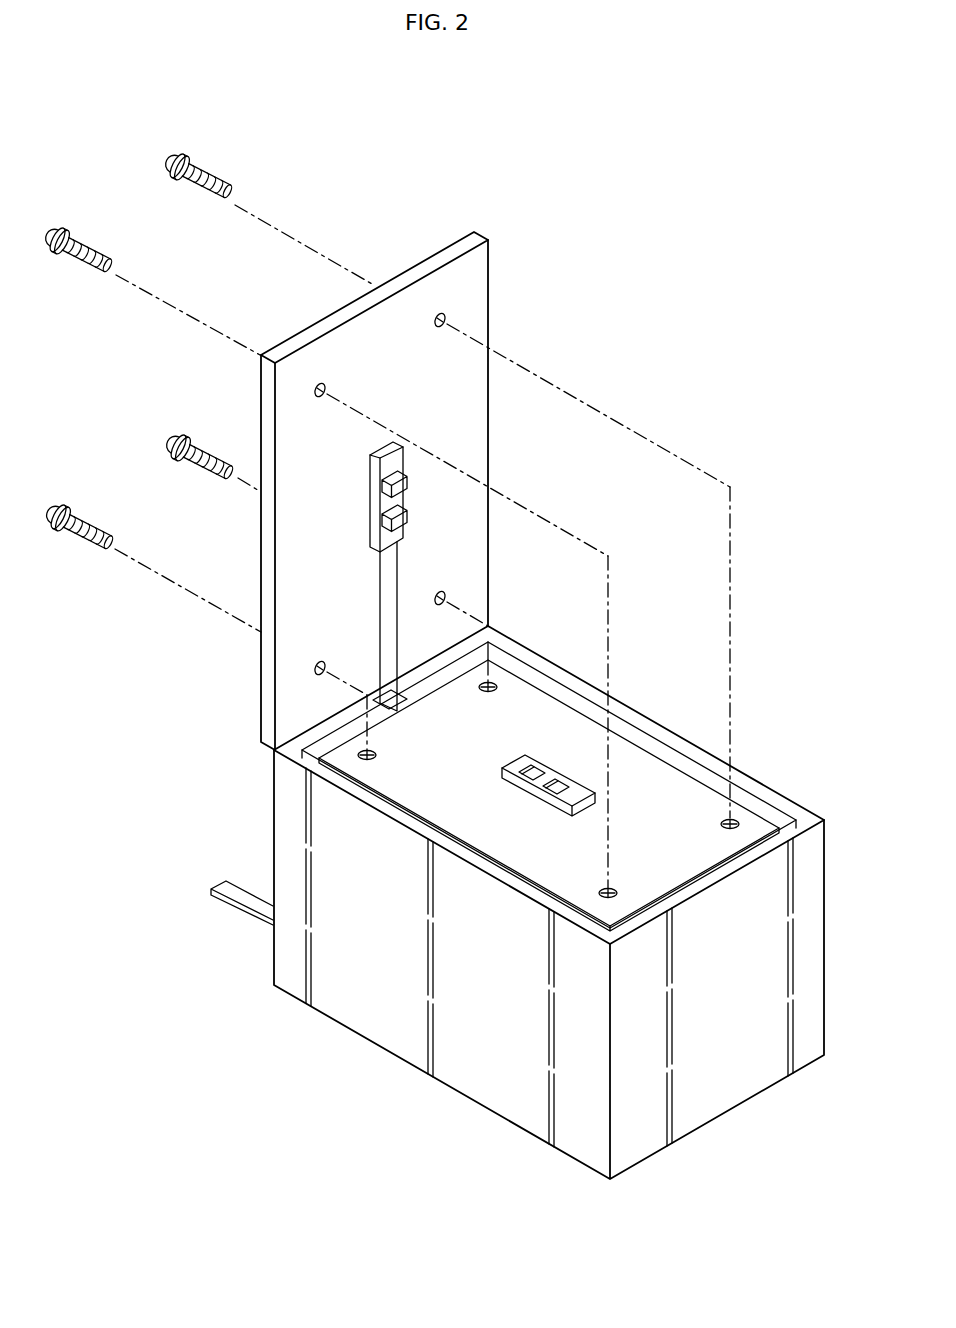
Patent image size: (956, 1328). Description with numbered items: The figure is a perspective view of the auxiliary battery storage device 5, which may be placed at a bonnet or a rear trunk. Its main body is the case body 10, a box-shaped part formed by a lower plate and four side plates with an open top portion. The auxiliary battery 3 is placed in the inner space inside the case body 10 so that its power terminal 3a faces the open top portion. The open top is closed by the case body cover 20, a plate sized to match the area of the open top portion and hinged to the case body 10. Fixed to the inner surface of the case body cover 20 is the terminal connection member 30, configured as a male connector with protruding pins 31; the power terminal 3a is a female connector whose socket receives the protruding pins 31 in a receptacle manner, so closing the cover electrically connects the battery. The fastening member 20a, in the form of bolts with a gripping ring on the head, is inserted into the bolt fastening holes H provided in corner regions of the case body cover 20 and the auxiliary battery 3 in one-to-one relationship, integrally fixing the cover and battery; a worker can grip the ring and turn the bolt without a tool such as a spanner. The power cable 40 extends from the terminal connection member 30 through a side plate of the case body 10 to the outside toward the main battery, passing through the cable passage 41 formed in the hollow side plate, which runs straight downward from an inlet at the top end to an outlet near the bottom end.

The auxiliary battery storage device 5 is at (143, 84).
The case body 10 is at (795, 769).
The auxiliary battery 3 is at (635, 762).
The power terminal 3a is at (552, 780).
The bolt fastening holes H is at (445, 321).
The case body cover 20 is at (473, 270).
The fastening member 20a is at (213, 180).
The terminal connection member 30 is at (395, 467).
The protruding pins 31 is at (400, 520).
The power cable 40 is at (247, 897).
The cable passage 41 is at (397, 716).